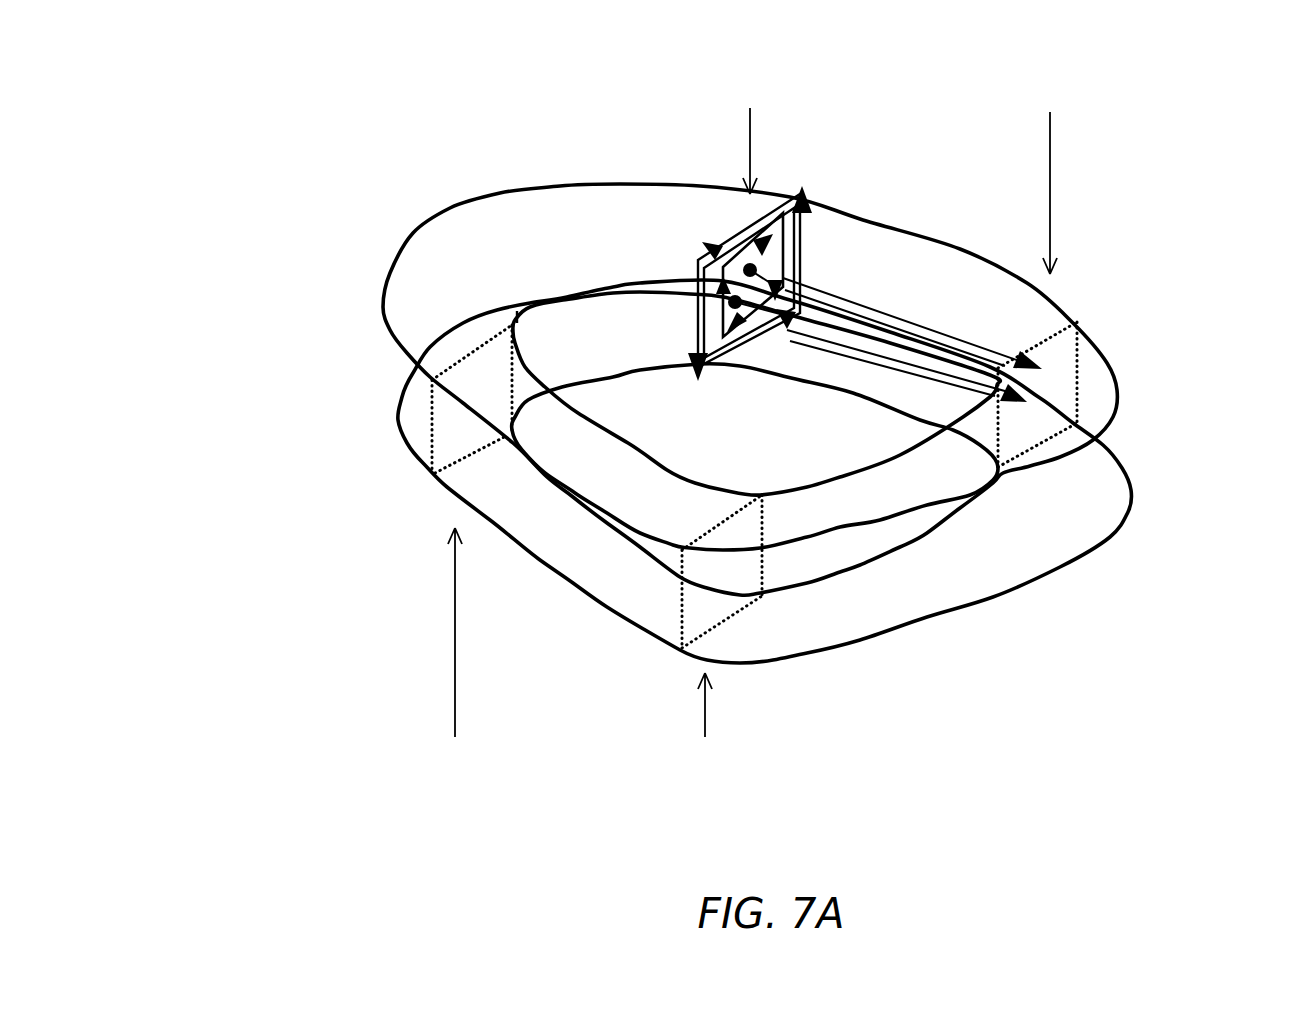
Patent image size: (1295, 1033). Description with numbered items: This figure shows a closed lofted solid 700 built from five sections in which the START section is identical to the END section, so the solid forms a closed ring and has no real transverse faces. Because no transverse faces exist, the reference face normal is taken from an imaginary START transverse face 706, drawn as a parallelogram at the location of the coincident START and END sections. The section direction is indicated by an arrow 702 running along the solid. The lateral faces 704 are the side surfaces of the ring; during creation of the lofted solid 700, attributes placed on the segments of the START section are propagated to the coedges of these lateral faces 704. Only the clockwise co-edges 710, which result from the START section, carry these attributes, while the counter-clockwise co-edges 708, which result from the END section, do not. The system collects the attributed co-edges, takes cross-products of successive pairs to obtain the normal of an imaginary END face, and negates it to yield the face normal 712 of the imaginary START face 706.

The closed lofted solid 700 is at (306, 561).
The section direction arrow 702 is at (880, 305).
The lateral faces 704 is at (937, 586).
The imaginary START transverse face 706 is at (681, 233).
The counter-clockwise co-edges 708 is at (690, 320).
The clockwise co-edges 710 is at (784, 236).
The face normal of the imaginary START face 712 is at (855, 347).